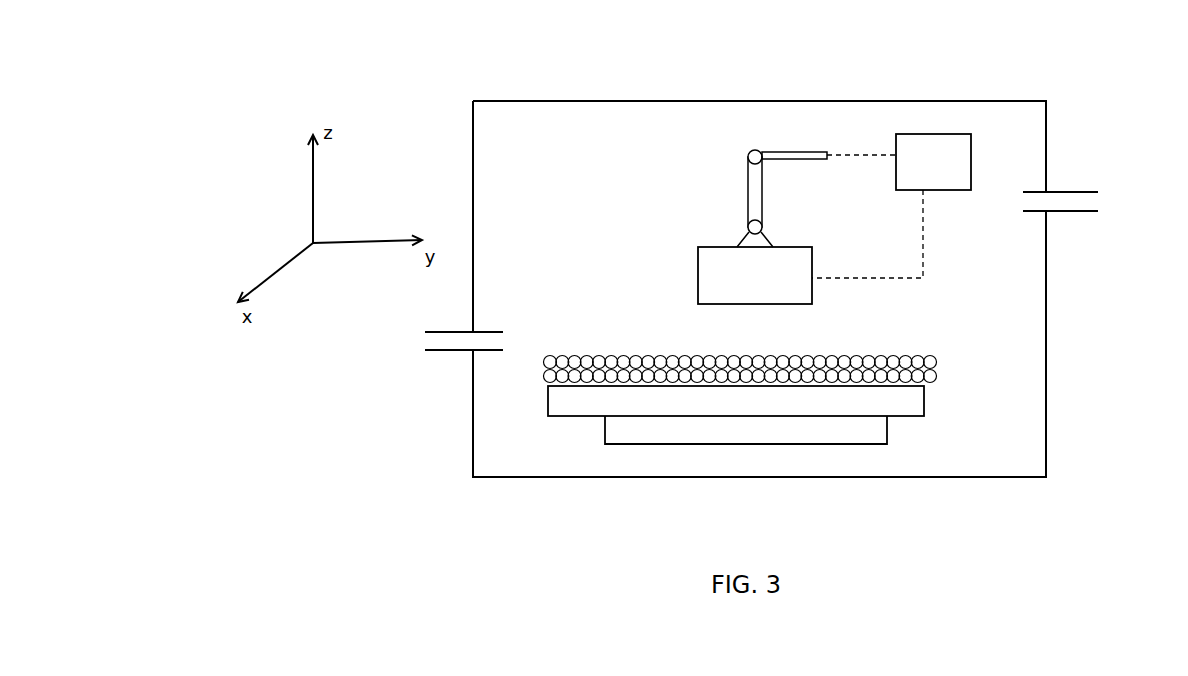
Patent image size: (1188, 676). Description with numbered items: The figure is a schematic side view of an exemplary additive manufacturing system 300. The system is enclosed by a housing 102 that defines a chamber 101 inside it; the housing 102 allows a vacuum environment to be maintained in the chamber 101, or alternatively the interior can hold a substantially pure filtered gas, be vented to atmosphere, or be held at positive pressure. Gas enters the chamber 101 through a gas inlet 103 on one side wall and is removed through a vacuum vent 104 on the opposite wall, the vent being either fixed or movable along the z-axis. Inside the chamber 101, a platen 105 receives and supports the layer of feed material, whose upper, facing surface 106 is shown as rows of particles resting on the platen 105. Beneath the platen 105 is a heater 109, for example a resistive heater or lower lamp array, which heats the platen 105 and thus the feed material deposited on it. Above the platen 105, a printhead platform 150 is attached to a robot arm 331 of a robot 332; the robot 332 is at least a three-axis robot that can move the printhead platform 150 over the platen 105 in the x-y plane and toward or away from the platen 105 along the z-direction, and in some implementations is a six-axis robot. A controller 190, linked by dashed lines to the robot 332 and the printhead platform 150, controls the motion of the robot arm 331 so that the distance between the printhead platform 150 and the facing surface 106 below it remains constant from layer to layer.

The additive manufacturing system 300 is at (687, 50).
The housing 102 is at (882, 99).
The chamber 101 is at (523, 153).
The gas inlet 103 is at (435, 338).
The vacuum vent 104 is at (1082, 201).
The controller 190 is at (891, 206).
The printhead platform 150 is at (755, 275).
The robot arm 331 is at (748, 178).
The robot 332 is at (743, 145).
The facing surface 106 is at (868, 353).
The platen 105 is at (736, 401).
The heater 109 is at (746, 430).